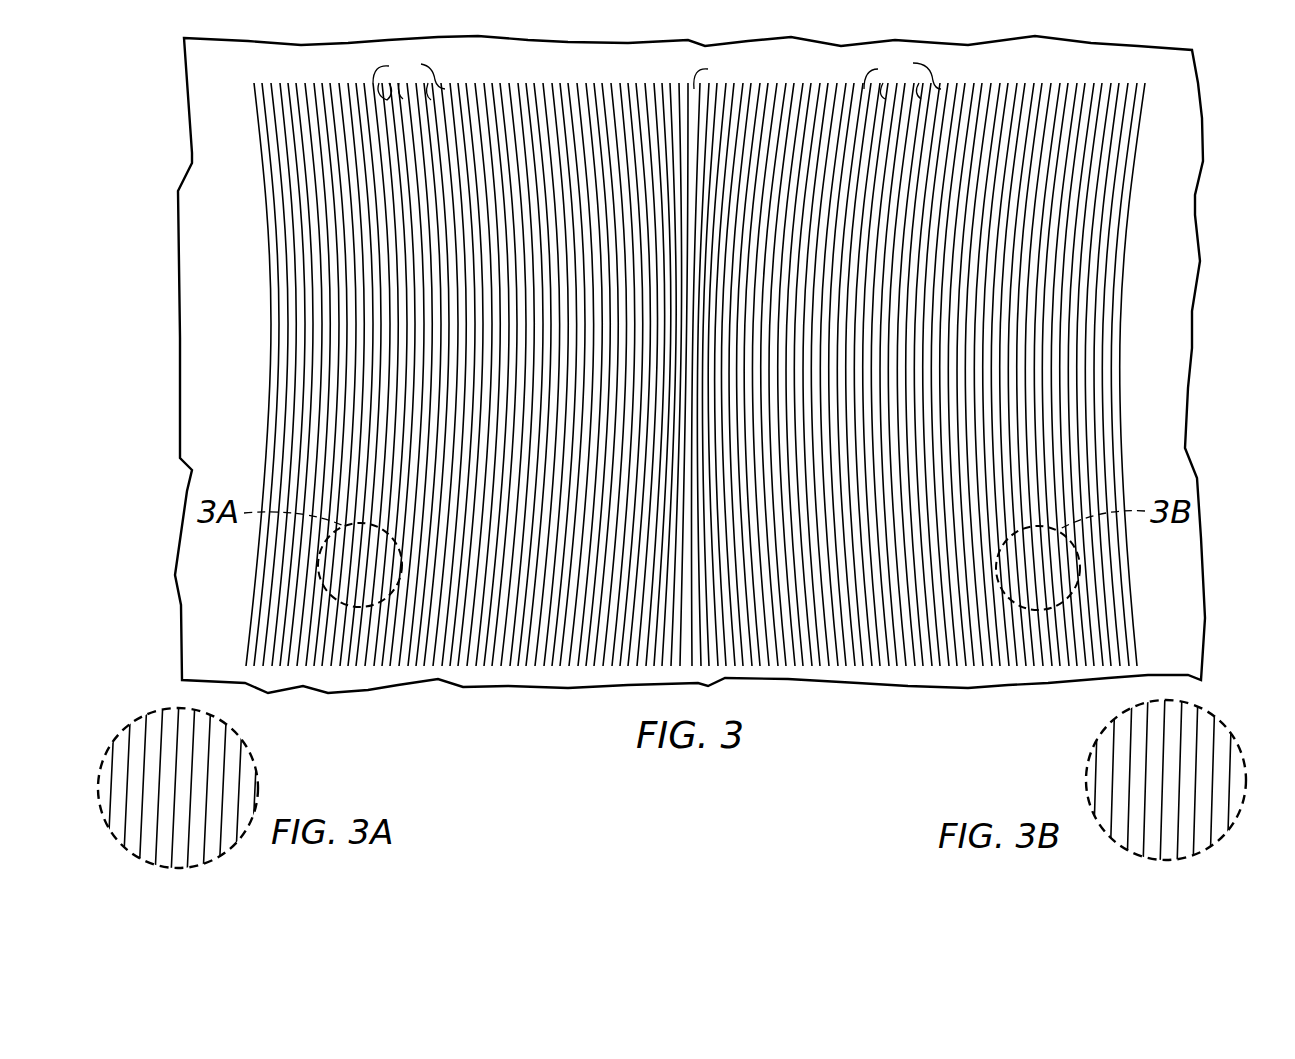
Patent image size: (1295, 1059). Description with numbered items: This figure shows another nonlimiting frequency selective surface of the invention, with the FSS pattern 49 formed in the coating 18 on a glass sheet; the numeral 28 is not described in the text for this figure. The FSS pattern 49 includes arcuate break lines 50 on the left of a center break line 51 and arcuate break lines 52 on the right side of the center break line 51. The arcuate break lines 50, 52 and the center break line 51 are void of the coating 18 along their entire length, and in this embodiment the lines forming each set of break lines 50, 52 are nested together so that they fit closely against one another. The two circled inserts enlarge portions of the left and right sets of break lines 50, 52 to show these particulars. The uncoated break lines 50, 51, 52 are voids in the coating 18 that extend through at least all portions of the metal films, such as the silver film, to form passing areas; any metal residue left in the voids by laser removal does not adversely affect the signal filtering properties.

In FIG. 3, the coating 18 is at (206, 284).
In FIG. 3A, the coating 18 is at (114, 735).
In FIG. 3B, the coating 18 is at (1222, 744).
In FIG. 3, the web 28 is at (1181, 114).
In FIG. 3, the FSS pattern 49 is at (221, 98).
In FIG. 3, the arcuate break lines 50 is at (409, 75).
In FIG. 3A, the arcuate break lines 50 is at (223, 794).
In FIG. 3, the center break line 51 is at (719, 73).
In FIG. 3, the arcuate break lines 52 is at (902, 78).
In FIG. 3B, the arcuate break lines 52 is at (1105, 766).